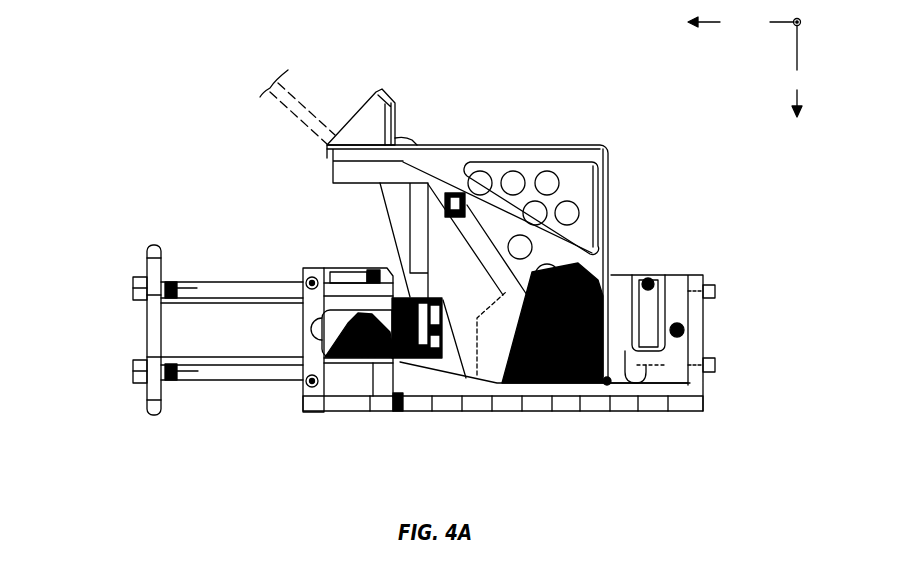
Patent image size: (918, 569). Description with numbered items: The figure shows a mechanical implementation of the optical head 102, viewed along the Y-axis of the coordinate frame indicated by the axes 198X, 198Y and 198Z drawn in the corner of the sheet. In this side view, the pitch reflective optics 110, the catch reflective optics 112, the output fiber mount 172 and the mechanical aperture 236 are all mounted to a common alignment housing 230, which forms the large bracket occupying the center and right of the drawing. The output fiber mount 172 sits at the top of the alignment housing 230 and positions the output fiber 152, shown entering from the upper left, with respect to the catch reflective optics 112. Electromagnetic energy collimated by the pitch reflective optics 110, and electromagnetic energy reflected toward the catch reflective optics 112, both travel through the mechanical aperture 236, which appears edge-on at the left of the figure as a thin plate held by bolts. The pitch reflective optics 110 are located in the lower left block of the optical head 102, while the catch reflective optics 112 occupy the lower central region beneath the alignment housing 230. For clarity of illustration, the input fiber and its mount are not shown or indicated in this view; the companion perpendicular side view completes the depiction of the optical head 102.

The optical head 102 is at (116, 72).
The pitch reflective optics 110 is at (352, 352).
The catch reflective optics 112 is at (567, 373).
The output fiber 152 is at (290, 107).
The output fiber mount 172 is at (395, 122).
The alignment housing 230 is at (613, 194).
The mechanical aperture 236 is at (155, 243).
The X-axis 198X is at (800, 71).
The Y-axis 198Y is at (794, 26).
The Z-axis 198Z is at (744, 23).